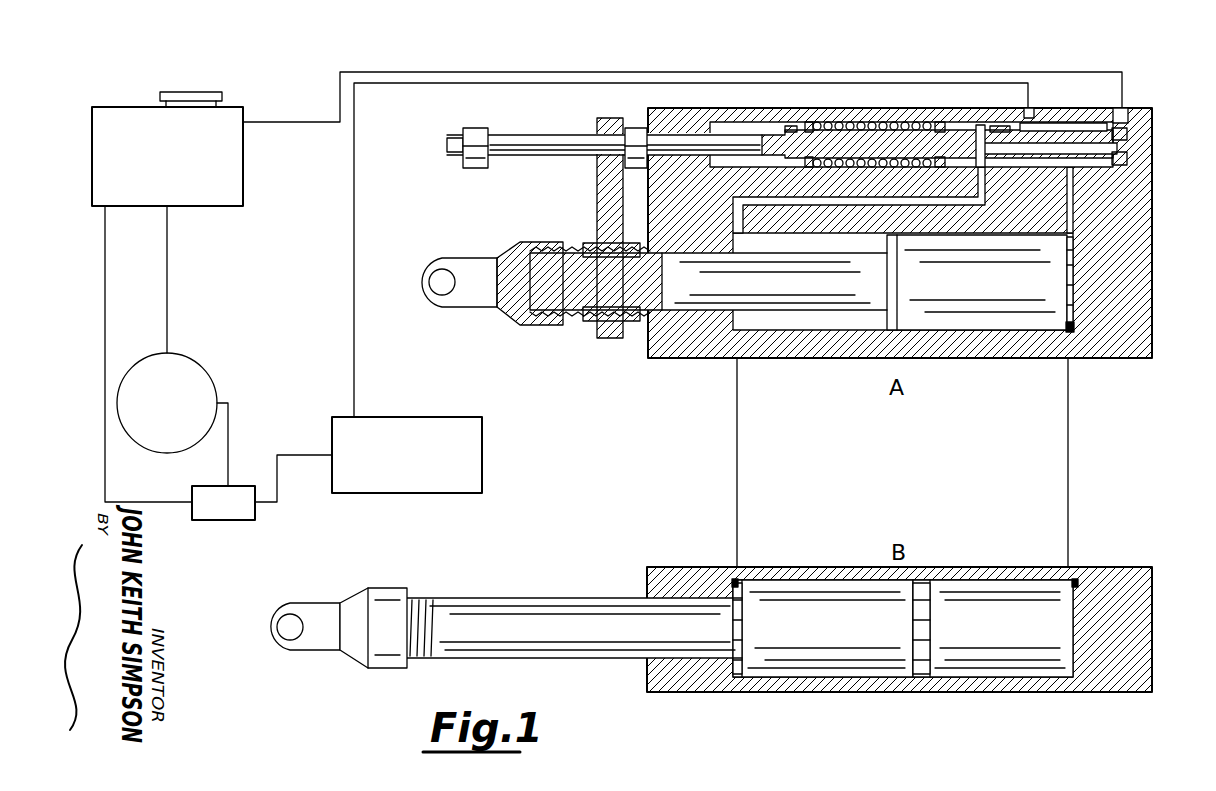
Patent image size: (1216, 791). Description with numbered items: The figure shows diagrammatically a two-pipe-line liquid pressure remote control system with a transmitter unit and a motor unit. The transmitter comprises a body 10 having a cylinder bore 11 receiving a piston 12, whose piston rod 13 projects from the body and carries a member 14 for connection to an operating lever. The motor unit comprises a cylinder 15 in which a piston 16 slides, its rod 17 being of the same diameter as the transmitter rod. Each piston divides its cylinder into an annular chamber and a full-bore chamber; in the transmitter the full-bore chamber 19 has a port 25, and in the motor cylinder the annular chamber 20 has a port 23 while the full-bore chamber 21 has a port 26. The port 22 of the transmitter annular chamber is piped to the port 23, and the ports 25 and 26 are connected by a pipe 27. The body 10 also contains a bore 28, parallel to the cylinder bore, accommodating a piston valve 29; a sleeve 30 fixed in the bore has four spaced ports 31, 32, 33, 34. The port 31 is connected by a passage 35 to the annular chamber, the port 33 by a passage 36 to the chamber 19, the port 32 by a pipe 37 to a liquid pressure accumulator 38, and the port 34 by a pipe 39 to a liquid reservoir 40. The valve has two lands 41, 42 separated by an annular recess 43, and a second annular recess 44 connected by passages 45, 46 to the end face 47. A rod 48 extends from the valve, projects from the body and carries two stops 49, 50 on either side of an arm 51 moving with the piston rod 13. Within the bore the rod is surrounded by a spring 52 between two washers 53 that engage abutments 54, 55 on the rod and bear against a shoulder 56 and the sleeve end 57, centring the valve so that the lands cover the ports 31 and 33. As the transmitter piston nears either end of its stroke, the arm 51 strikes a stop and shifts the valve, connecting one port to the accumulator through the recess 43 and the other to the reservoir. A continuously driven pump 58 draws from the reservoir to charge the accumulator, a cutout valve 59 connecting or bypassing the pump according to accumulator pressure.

The body 10 is at (688, 358).
The cylinder bore 11 is at (848, 345).
The piston 12 is at (990, 330).
The piston rod 13 is at (708, 281).
The member 14 is at (470, 302).
The cylinder 15 is at (1010, 592).
The piston 16 is at (830, 595).
The rod 17 is at (545, 615).
The chamber 19 is at (1078, 358).
The annular chamber 20 is at (752, 577).
The chamber 21 is at (965, 590).
The port 22 is at (748, 362).
The port 23 is at (733, 575).
The port 25 is at (1056, 358).
The port 26 is at (1075, 574).
The pipe 27 is at (1069, 443).
The bore 28 is at (905, 124).
The piston valve 29 is at (1105, 148).
The sleeve 30 is at (1068, 125).
The port 31 is at (1003, 182).
The port 32 is at (1030, 110).
The port 33 is at (1053, 190).
The port 34 is at (1121, 110).
The passage 35 is at (935, 214).
The passage 36 is at (1072, 201).
The pipe 37 is at (777, 107).
The liquid pressure accumulator 38 is at (407, 455).
The pipe 39 is at (572, 60).
The liquid reservoir 40 is at (167, 149).
The land 41 is at (1013, 128).
The land 42 is at (1097, 126).
The annular recess 43 is at (1047, 131).
The annular recess 44 is at (980, 128).
The passage 45 is at (998, 126).
The passage 46 is at (1122, 136).
The end face 47 is at (1122, 160).
The rod 48 is at (673, 148).
The stop 49 is at (478, 138).
The stop 50 is at (637, 140).
The arm 51 is at (600, 203).
The spring 52 is at (850, 123).
The washer 53 is at (810, 126).
The abutment 54 is at (800, 125).
The abutment 55 is at (946, 124).
The shoulder 56 is at (778, 126).
The end 57 is at (968, 190).
The pump 58 is at (167, 403).
The cutout valve 59 is at (223, 504).